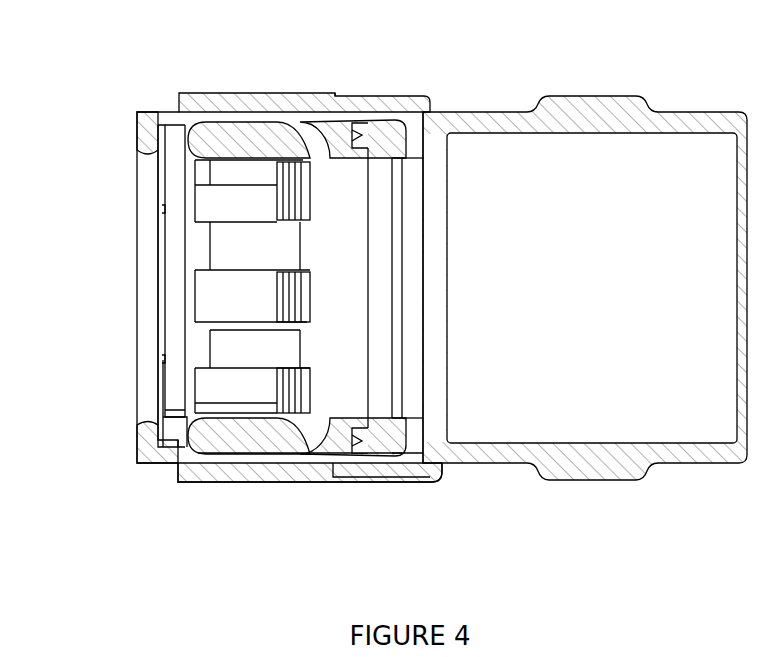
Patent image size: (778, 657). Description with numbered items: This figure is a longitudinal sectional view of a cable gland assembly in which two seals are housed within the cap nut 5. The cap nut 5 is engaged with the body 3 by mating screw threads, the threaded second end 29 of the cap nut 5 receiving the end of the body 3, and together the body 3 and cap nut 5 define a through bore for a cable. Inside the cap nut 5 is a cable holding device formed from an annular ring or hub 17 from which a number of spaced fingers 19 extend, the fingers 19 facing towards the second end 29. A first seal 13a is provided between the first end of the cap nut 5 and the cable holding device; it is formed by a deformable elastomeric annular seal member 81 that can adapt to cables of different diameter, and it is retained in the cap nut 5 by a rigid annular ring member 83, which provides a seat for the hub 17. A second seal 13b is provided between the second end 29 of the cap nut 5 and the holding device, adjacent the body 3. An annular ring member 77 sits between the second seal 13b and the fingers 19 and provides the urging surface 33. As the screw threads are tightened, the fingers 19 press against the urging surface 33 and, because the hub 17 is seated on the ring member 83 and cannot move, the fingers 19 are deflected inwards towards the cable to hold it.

The body 3 is at (586, 108).
The cap nut 5 is at (301, 293).
The urging surface 33 is at (337, 96).
The annular seal member 81 is at (163, 183).
The annular ring 17 is at (193, 348).
The first seal 13a is at (163, 398).
The second seal 13b is at (377, 458).
The second end 29 is at (152, 465).
The annular ring member 83 is at (187, 448).
The fingers 19 is at (262, 440).
The annular ring member 77 is at (345, 462).